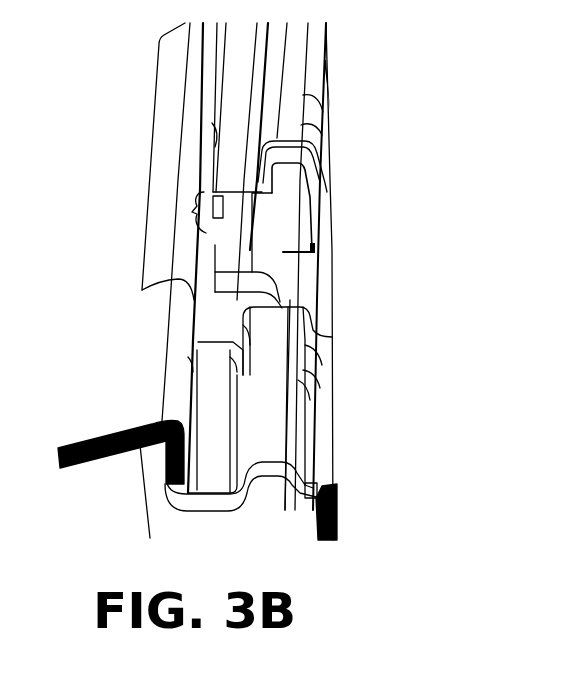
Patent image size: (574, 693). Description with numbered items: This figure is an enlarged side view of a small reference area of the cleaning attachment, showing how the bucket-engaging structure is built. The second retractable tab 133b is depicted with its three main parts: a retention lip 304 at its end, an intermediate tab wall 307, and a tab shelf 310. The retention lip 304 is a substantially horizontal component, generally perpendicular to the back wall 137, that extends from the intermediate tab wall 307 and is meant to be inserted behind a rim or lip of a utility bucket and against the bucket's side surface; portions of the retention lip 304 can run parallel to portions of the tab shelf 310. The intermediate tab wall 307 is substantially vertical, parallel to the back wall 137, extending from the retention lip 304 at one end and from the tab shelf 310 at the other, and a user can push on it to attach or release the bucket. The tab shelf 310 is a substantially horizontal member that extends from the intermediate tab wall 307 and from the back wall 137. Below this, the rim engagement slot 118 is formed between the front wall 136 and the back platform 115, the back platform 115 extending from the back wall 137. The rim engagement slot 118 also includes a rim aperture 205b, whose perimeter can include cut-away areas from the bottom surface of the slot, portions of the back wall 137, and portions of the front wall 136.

The second retractable tab 133b is at (395, 205).
The retention lip 304 is at (222, 265).
The intermediate tab wall 307 is at (312, 252).
The tab shelf 310 is at (308, 297).
The rim aperture 205b is at (194, 328).
The back platform 115 is at (292, 407).
The front wall 136 is at (163, 468).
The back wall 137 is at (337, 520).
The rim engagement slot 118 is at (195, 513).